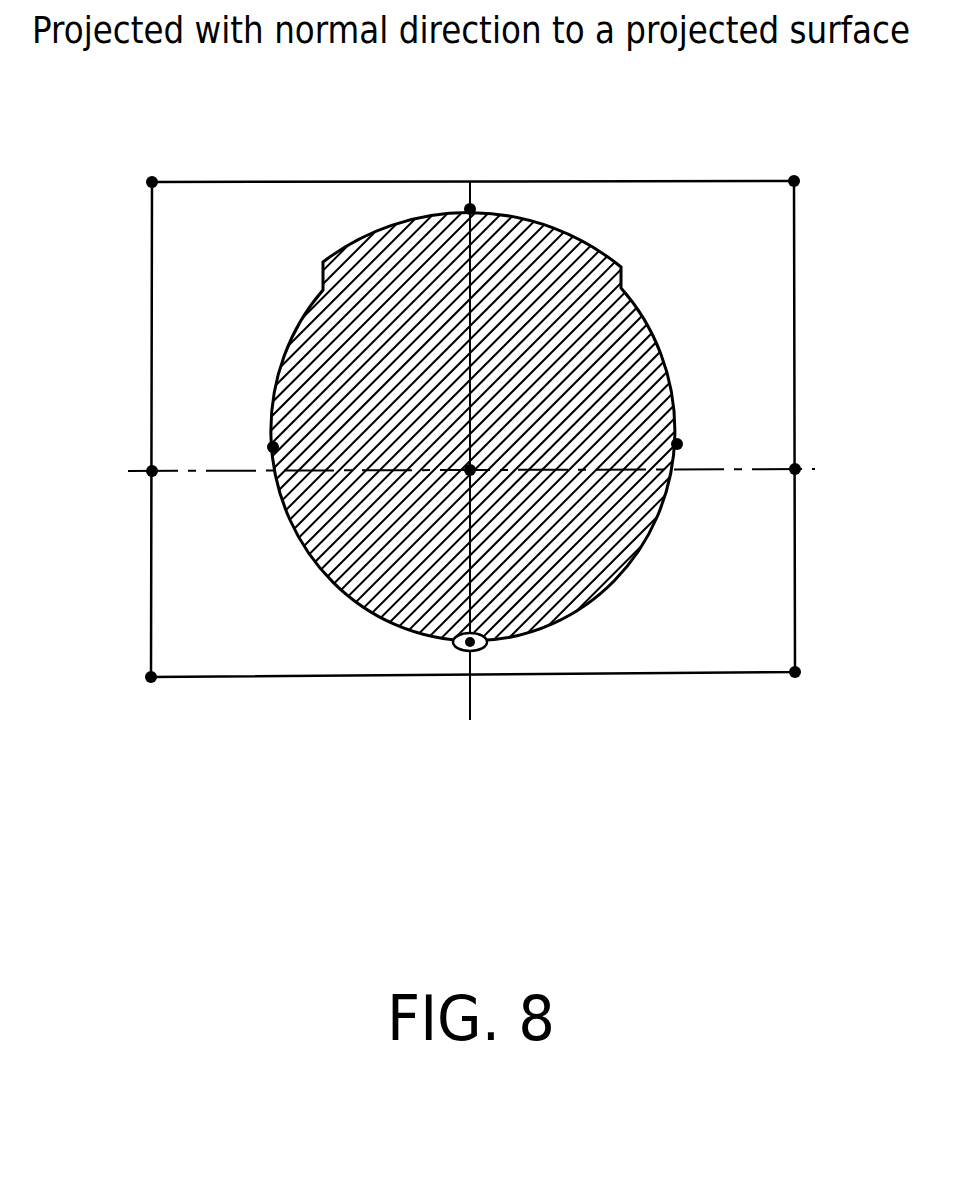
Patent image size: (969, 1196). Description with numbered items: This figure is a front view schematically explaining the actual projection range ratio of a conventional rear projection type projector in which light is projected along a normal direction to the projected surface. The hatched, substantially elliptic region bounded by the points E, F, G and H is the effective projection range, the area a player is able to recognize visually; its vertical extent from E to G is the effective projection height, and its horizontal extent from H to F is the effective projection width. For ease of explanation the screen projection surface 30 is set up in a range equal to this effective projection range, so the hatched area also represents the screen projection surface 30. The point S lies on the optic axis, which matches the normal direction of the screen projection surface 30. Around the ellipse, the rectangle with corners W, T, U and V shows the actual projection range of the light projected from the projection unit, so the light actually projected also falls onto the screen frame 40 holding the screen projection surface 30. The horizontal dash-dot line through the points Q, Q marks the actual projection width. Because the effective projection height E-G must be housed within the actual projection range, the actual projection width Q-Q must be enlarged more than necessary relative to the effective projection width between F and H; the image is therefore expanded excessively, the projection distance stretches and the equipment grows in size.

The screen projection surface 30 is at (378, 587).
The screen frame 40 is at (252, 643).
The top point of effective projection range E is at (470, 208).
The left point of effective projection range H is at (259, 447).
The right point of effective projection range F is at (690, 434).
The optic axis point S is at (489, 450).
The bottom point of effective projection range G is at (504, 653).
The corner of actual projection range W is at (155, 165).
The corner of actual projection range T is at (793, 162).
The corner of actual projection range U is at (786, 702).
The corner of actual projection range V is at (153, 699).
The actual projection width point Q is at (473, 452).